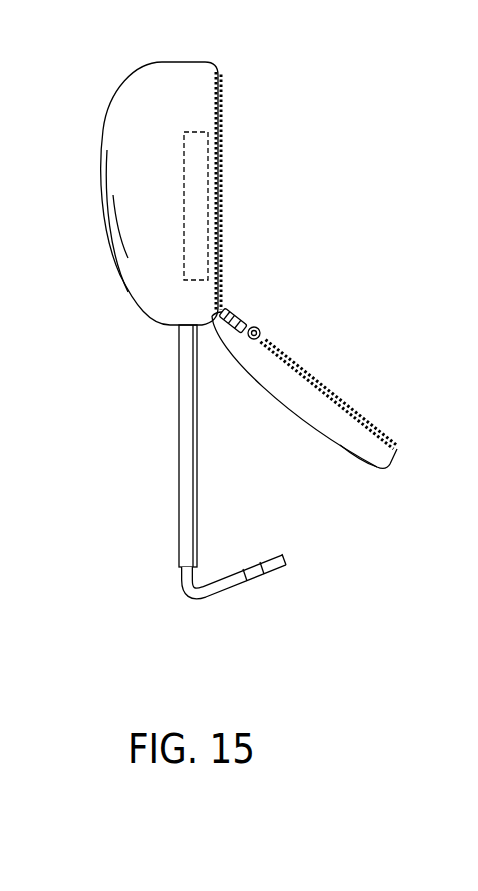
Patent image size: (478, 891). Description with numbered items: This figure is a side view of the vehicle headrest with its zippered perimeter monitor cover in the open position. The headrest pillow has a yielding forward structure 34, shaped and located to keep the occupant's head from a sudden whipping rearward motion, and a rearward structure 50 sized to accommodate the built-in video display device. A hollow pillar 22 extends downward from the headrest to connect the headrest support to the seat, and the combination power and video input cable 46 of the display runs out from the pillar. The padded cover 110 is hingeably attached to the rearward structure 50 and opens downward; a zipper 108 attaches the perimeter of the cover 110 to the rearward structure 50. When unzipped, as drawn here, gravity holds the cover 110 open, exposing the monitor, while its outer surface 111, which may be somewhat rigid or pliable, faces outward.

The hollow pillar 22 is at (188, 503).
The yielding forward structure 34 is at (103, 183).
The combination power and video input cable 46 is at (228, 592).
The rearward structure 50 is at (216, 72).
The zipper 108 is at (248, 324).
The cover 110 is at (318, 422).
The outer surface 111 is at (348, 455).